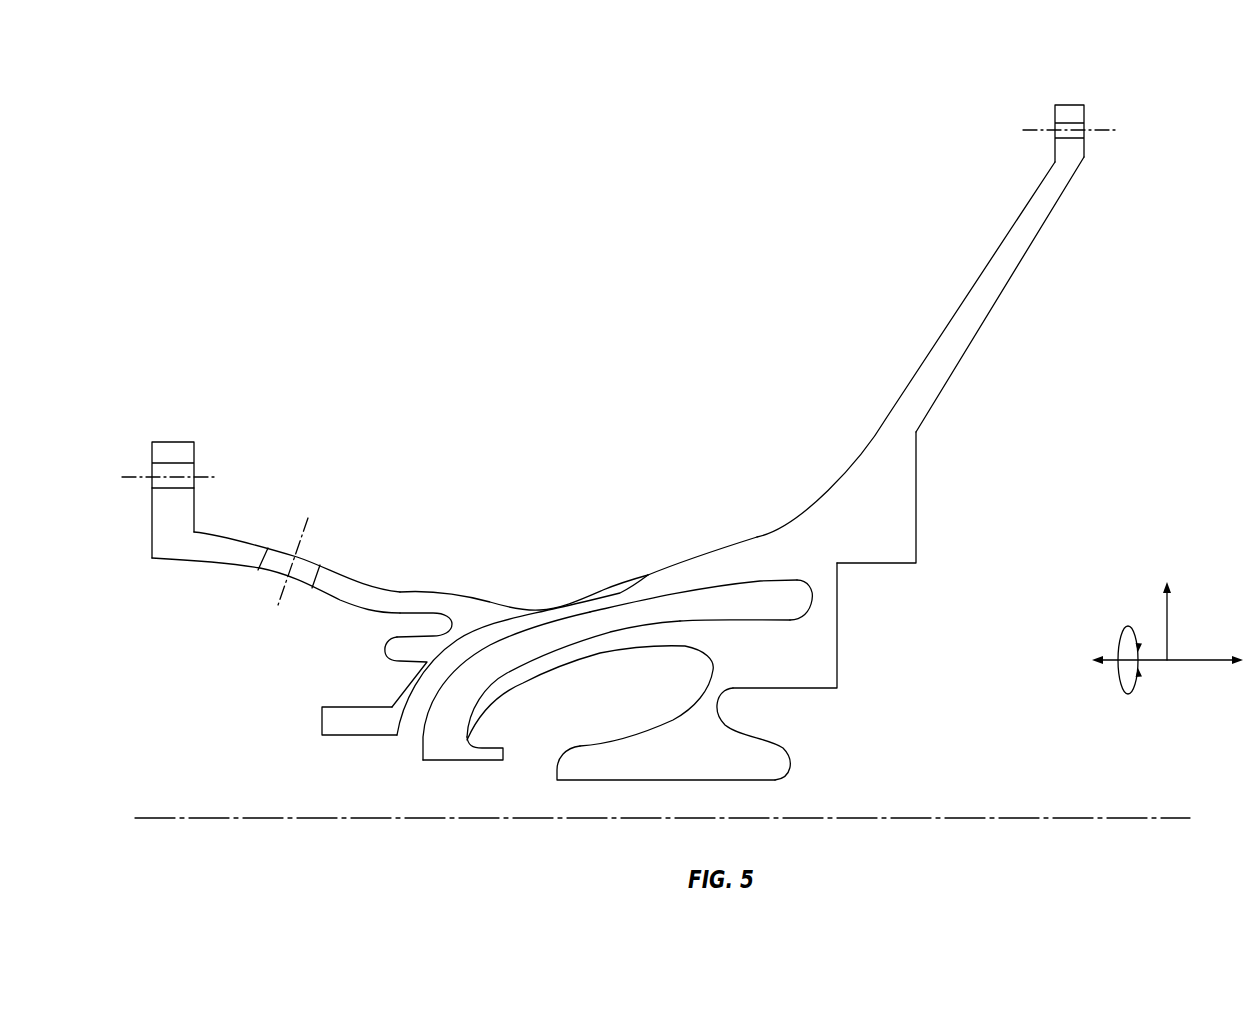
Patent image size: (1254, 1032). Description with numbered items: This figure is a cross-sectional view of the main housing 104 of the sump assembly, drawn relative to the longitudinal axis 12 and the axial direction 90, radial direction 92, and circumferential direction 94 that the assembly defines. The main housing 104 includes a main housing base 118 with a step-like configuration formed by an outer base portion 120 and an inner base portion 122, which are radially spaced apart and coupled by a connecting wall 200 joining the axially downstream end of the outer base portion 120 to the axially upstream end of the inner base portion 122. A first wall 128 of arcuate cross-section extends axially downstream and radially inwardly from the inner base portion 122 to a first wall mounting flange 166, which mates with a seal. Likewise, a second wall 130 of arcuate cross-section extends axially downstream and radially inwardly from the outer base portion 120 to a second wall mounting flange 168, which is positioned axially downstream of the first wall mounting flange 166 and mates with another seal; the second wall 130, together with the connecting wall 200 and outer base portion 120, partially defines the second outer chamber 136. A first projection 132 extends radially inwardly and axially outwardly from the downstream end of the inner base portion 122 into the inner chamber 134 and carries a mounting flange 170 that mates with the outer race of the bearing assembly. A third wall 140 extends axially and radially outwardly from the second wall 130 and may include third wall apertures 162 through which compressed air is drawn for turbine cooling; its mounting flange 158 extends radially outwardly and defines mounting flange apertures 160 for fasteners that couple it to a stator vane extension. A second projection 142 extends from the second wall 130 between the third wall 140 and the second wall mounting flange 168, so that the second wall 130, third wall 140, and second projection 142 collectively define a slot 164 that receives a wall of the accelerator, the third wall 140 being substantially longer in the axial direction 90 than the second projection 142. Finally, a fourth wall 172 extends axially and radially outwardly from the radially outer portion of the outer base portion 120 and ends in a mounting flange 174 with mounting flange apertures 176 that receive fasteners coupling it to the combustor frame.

The longitudinal axis 12 is at (200, 820).
The axial direction 90 is at (1192, 665).
The radial direction 92 is at (1170, 615).
The circumferential direction 94 is at (1128, 626).
The main housing 104 is at (355, 280).
The main housing base 118 is at (881, 606).
The outer base portion 120 is at (908, 516).
The inner base portion 122 is at (828, 660).
The first wall 128 is at (600, 641).
The second wall 130 is at (648, 583).
The first projection 132 is at (712, 706).
The inner chamber 134 is at (530, 780).
The second outer chamber 136 is at (746, 590).
The third wall 140 is at (373, 591).
The second projection 142 is at (378, 646).
The mounting flange 158 is at (168, 503).
The mounting flange apertures 160 is at (203, 463).
The third wall apertures 162 is at (280, 539).
The slot 164 is at (378, 626).
The first wall mounting flange 166 is at (453, 750).
The second wall mounting flange 168 is at (357, 725).
The mounting flange 170 is at (663, 776).
The fourth wall 172 is at (943, 349).
The mounting flange 174 is at (1068, 113).
The mounting flange apertures 176 is at (1090, 138).
The connecting wall 200 is at (798, 584).